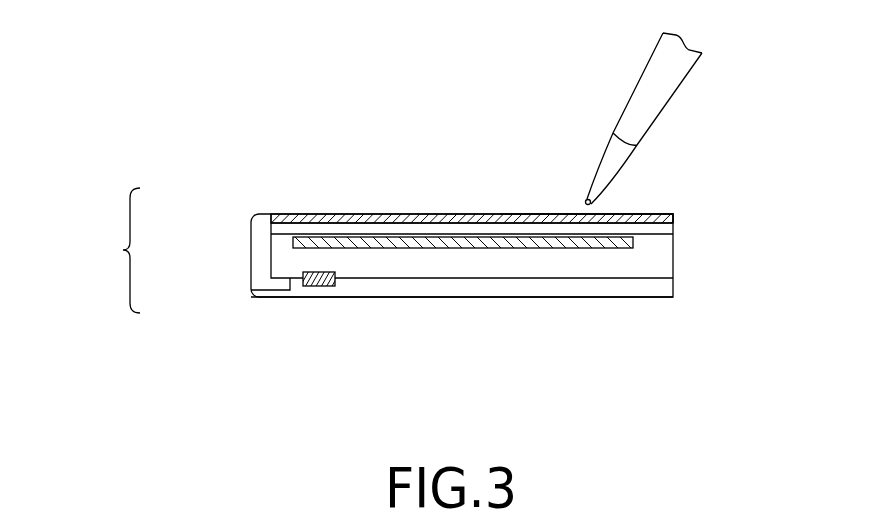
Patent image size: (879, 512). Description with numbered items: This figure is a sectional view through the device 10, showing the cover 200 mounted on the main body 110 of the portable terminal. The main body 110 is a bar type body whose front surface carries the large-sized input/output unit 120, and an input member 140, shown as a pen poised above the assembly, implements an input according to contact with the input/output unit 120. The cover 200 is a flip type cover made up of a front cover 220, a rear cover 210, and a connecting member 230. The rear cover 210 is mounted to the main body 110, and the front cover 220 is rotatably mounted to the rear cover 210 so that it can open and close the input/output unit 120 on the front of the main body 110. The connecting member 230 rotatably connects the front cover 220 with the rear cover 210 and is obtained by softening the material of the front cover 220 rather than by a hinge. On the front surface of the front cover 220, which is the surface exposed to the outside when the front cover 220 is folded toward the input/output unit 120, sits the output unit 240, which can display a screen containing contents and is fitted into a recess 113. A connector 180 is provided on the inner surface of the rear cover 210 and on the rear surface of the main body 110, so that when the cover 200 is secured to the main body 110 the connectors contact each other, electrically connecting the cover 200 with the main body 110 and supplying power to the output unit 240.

The device 10 is at (409, 130).
The main body 110 is at (658, 268).
The recess 113 is at (657, 222).
The input/output unit 120 is at (658, 250).
The input member 140 is at (667, 82).
The connector 180 is at (320, 287).
The cover 200 is at (113, 250).
The rear cover 210 is at (285, 294).
The front cover 220 is at (288, 228).
The connecting member 230 is at (262, 262).
The output unit 240 is at (327, 217).